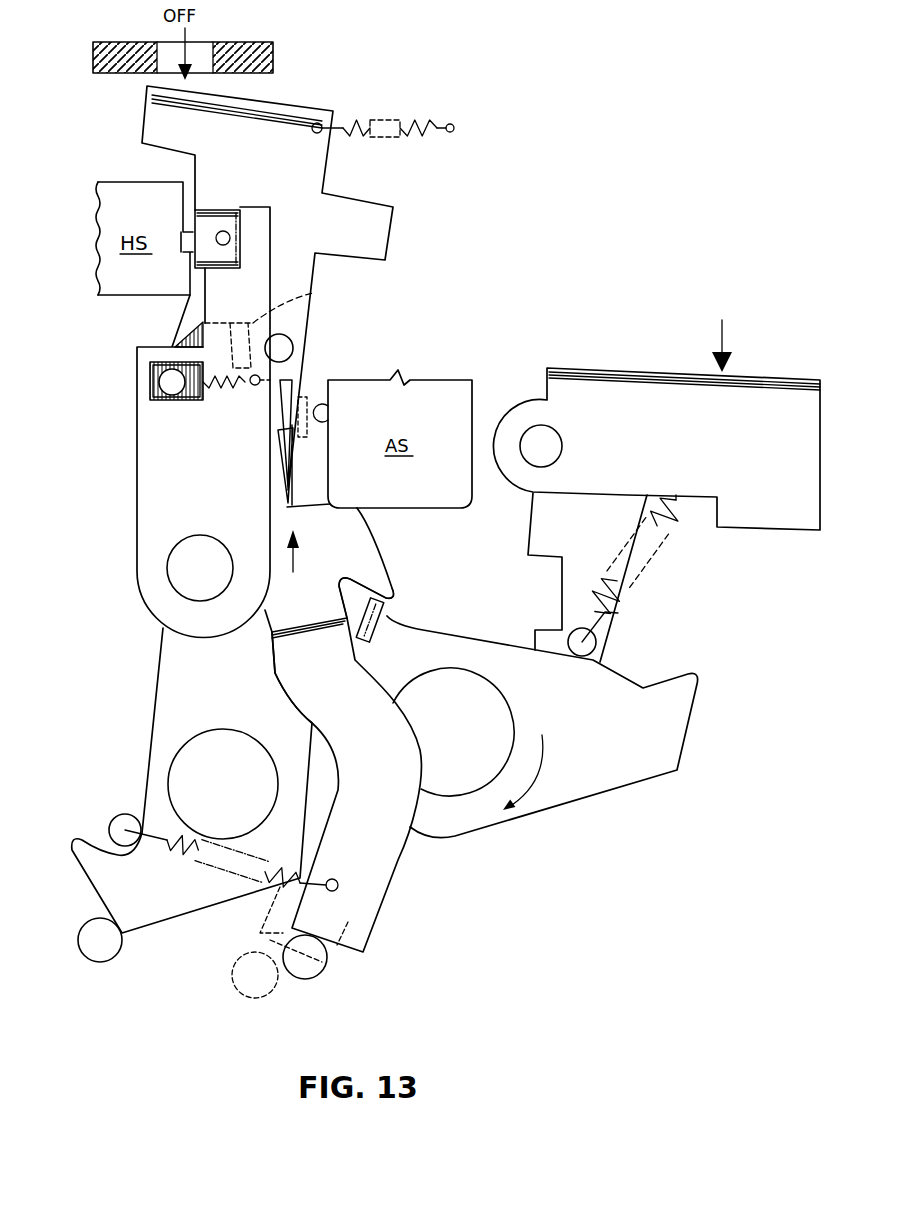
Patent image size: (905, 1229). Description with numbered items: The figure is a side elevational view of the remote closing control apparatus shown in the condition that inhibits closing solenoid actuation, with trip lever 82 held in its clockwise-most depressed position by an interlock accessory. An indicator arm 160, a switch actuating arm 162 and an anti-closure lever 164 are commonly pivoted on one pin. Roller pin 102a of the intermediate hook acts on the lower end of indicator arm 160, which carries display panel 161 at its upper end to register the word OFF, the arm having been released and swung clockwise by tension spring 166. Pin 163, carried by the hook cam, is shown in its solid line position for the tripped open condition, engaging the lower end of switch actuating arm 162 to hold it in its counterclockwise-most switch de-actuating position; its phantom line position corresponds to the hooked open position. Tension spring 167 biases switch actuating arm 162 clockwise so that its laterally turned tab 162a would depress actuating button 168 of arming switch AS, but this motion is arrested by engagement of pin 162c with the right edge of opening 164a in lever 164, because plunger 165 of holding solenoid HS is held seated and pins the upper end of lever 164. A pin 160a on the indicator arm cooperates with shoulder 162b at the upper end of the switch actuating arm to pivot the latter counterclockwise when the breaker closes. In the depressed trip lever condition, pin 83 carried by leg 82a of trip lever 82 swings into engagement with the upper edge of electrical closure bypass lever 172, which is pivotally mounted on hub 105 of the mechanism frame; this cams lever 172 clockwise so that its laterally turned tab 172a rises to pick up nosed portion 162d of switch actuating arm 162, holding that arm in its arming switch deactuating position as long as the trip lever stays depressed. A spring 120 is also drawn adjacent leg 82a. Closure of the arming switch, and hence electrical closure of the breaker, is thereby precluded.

The display panel 161 is at (285, 106).
The tension spring 166 is at (380, 118).
The plunger 165 is at (232, 212).
The anti-closure lever 164 is at (220, 496).
The opening 164a is at (158, 400).
The pin 162c is at (160, 381).
The shoulder 162b is at (305, 297).
The pin 160a is at (292, 343).
The laterally turned tab 162a is at (290, 392).
The actuating button 168 is at (330, 412).
The switch actuating arm 162 is at (338, 676).
The nosed portion 162d is at (389, 592).
The laterally turned tab 172a is at (373, 621).
The electrical closure bypass lever 172 is at (617, 742).
The hub 105 is at (487, 700).
The indicator arm 160 is at (240, 708).
The tension spring 167 is at (208, 868).
The roller pin 102a is at (98, 950).
The pin 163 is at (303, 975).
The trip lever 82 is at (690, 442).
The leg 82a is at (563, 602).
The spring 120 is at (675, 533).
The pin 83 is at (597, 642).